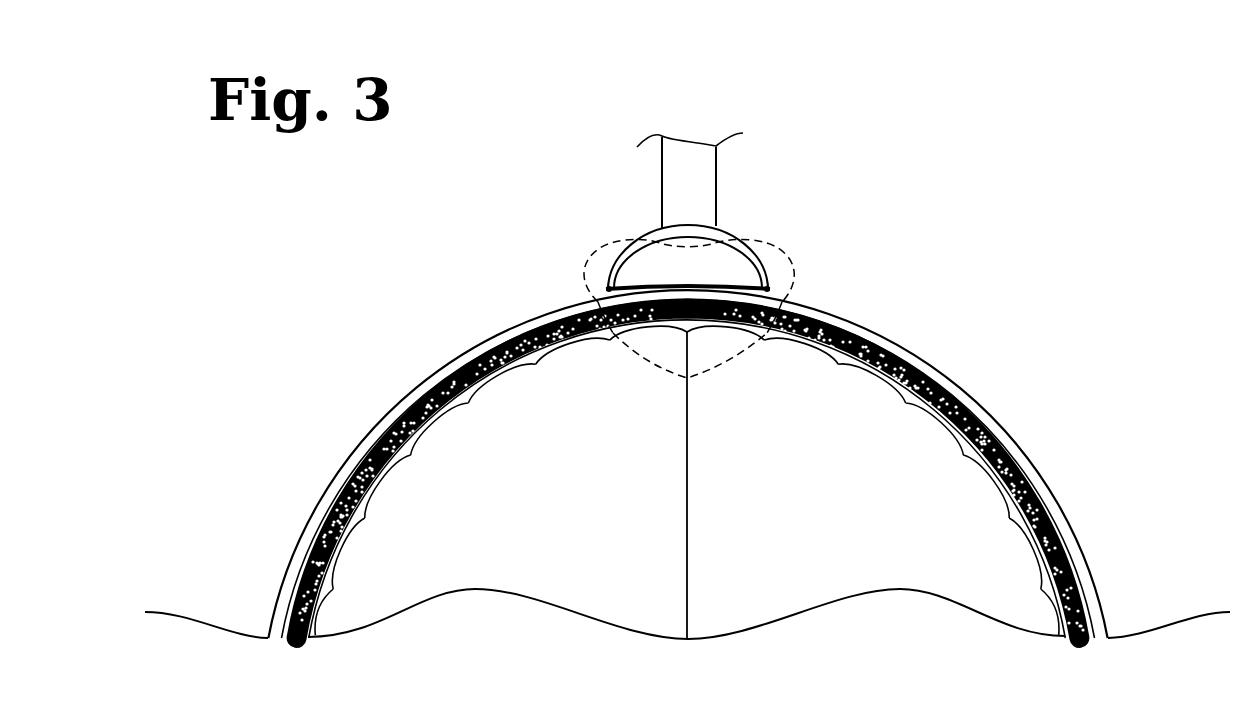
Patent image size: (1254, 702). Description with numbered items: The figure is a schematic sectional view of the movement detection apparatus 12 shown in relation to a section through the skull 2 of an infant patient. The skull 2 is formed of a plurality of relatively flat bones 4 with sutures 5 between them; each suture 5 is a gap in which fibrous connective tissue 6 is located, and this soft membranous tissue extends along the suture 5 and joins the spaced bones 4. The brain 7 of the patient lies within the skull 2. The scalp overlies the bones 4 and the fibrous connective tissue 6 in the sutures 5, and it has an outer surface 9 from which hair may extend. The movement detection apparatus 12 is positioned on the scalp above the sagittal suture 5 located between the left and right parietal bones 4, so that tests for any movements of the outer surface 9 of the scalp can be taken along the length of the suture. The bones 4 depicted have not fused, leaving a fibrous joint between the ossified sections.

The skull 2 is at (283, 466).
The bones 4 is at (490, 351).
The sutures 5 is at (688, 310).
The fibrous connective tissue 6 is at (610, 240).
The brain 7 is at (463, 482).
The outer surface 9 is at (418, 380).
The movement detection apparatus 12 is at (728, 214).